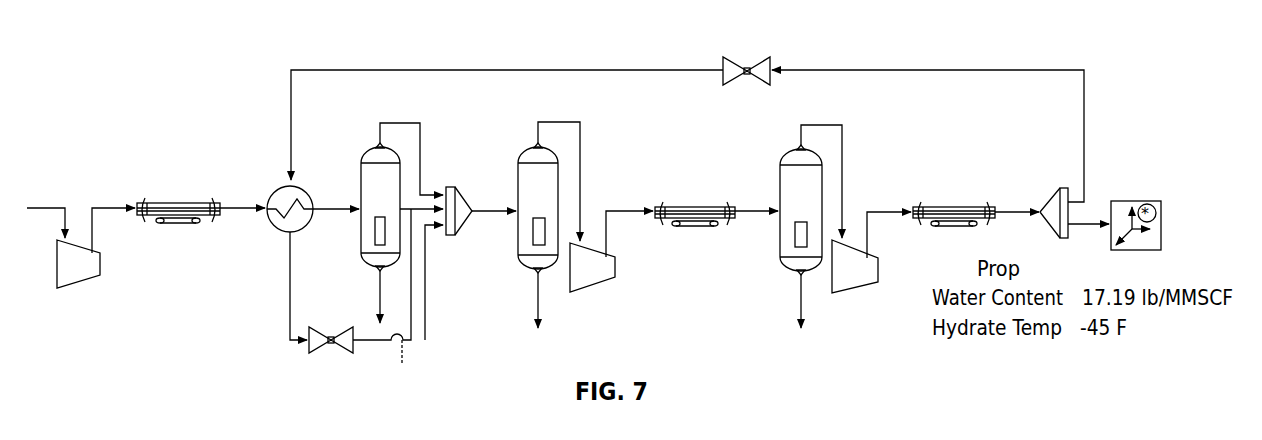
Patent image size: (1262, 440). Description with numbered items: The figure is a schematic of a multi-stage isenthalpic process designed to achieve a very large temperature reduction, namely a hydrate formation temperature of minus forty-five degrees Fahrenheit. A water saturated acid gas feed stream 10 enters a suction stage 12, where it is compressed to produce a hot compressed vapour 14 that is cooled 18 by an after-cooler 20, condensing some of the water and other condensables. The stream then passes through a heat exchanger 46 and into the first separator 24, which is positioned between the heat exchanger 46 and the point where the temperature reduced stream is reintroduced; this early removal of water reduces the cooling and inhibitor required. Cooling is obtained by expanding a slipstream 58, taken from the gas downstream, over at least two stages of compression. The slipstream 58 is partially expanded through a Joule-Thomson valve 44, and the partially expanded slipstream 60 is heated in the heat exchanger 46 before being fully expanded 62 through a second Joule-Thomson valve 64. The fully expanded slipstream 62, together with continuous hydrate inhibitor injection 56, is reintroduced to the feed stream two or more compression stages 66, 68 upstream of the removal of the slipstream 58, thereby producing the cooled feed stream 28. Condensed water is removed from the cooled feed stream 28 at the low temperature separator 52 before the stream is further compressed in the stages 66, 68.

The water saturated acid gas feed stream 10 is at (47, 206).
The suction stage 12 is at (80, 290).
The hot compressed vapour 14 is at (108, 206).
The cooled stream 18 is at (232, 213).
The after-cooler 20 is at (180, 200).
The first separator 24 is at (367, 152).
The cooled feed stream 28 is at (490, 213).
The Joule-Thomson valve 44 is at (760, 60).
The heat exchanger 46 is at (275, 190).
The low temperature separator 52 is at (527, 155).
The continuous hydrate inhibitor injection 56 is at (425, 297).
The slipstream 58 is at (930, 69).
The partially expanded slipstream 60 is at (610, 69).
The fully expanded slipstream 62 is at (405, 366).
The Joule-Thomson valve 64 is at (331, 336).
The compression stage 66 is at (617, 278).
The compression stage 68 is at (852, 292).